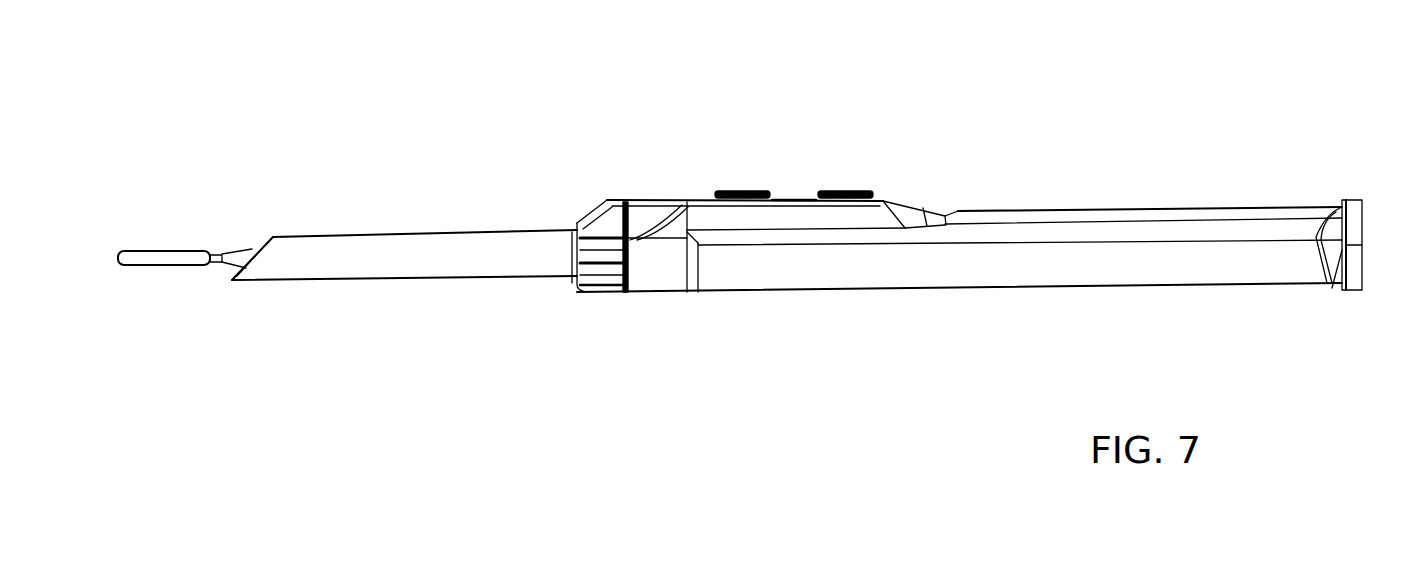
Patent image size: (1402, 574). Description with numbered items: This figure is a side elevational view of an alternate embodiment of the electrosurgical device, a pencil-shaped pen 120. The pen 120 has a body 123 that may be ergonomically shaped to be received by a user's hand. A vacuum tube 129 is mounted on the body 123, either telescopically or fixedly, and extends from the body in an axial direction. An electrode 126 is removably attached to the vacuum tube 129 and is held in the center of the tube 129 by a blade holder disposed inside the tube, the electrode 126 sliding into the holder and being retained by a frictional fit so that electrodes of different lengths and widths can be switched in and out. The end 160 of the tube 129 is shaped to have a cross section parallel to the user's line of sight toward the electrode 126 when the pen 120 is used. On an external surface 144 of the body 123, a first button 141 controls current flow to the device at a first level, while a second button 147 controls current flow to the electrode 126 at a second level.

The pen 120 is at (988, 120).
The body 123 is at (1070, 237).
The electrode 126 is at (188, 237).
The vacuum tube 129 is at (427, 233).
The first button 141 is at (733, 190).
The external surface 144 is at (792, 196).
The second button 147 is at (852, 192).
The end of the tube 160 is at (258, 237).